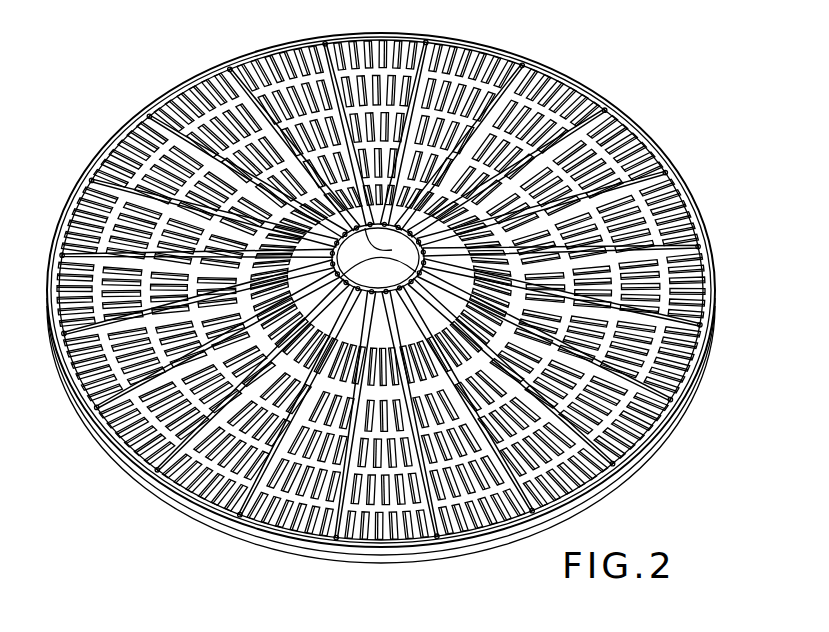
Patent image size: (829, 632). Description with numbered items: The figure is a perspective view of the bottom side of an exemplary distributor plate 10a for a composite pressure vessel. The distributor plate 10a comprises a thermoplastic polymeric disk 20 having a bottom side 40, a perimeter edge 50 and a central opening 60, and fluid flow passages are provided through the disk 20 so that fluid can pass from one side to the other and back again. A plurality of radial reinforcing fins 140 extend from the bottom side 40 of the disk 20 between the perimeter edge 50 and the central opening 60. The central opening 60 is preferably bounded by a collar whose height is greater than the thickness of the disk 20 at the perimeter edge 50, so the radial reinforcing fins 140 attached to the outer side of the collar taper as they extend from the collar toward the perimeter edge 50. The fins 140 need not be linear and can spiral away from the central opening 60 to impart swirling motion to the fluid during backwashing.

The distributor plate 10a is at (130, 76).
The thermoplastic polymeric disk 20 is at (652, 124).
The bottom side 40 is at (693, 270).
The perimeter edge 50 is at (243, 548).
The central opening 60 is at (458, 44).
The radial reinforcing fins 140 is at (108, 157).